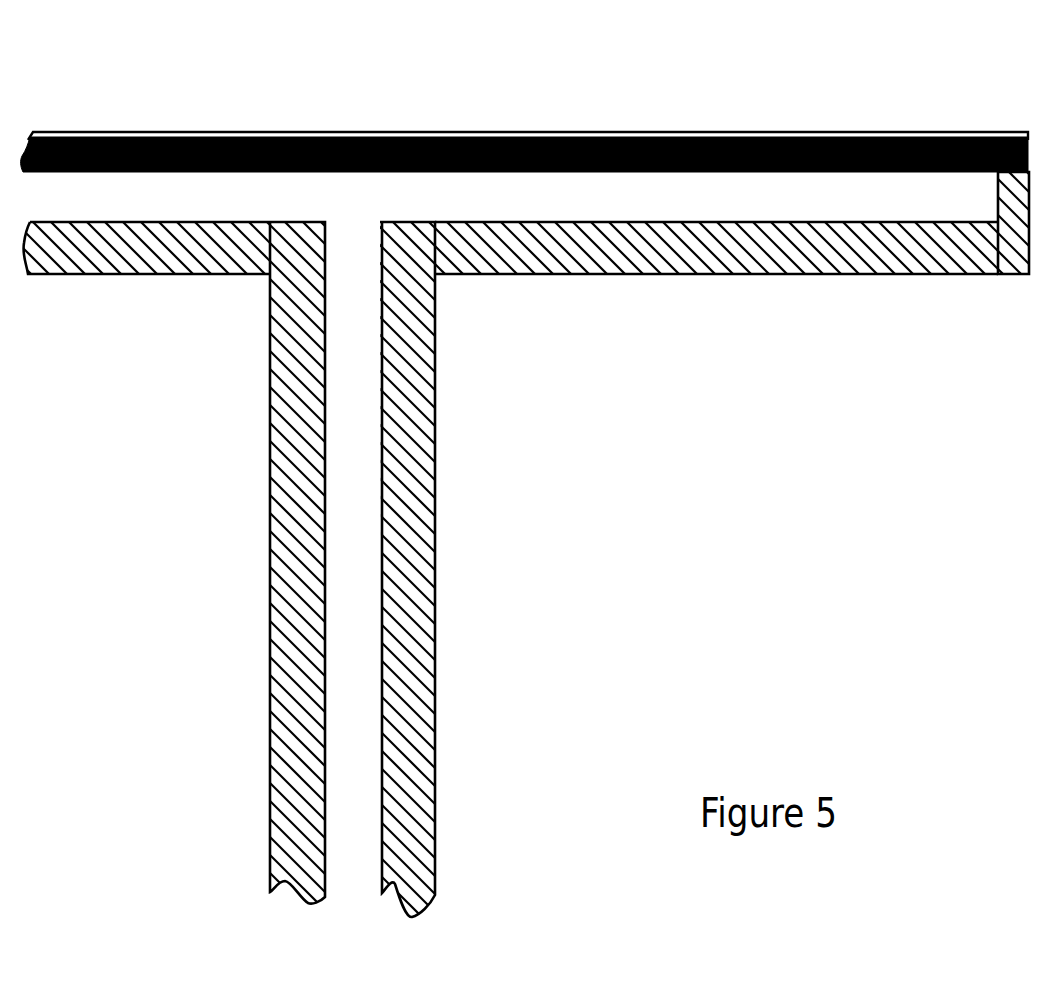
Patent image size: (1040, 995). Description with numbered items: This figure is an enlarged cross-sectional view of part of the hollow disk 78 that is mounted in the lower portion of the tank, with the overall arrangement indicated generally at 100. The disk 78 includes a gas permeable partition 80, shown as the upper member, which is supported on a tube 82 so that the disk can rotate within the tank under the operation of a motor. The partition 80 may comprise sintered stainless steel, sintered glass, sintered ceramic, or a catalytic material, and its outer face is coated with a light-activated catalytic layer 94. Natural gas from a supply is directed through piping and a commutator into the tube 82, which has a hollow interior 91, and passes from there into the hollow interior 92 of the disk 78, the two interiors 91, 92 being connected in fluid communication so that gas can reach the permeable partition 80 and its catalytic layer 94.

The mounting assembly 100 is at (176, 81).
The light-activated catalytic layer 94 is at (373, 135).
The gas permeable partition 80 is at (798, 132).
The hollow disk 78 is at (590, 274).
The tube 82 is at (435, 378).
The hollow interior of the tube 91 is at (378, 504).
The hollow interior of the disk 92 is at (817, 221).